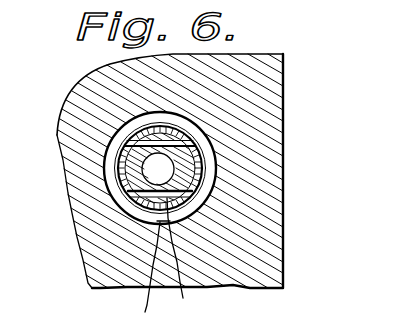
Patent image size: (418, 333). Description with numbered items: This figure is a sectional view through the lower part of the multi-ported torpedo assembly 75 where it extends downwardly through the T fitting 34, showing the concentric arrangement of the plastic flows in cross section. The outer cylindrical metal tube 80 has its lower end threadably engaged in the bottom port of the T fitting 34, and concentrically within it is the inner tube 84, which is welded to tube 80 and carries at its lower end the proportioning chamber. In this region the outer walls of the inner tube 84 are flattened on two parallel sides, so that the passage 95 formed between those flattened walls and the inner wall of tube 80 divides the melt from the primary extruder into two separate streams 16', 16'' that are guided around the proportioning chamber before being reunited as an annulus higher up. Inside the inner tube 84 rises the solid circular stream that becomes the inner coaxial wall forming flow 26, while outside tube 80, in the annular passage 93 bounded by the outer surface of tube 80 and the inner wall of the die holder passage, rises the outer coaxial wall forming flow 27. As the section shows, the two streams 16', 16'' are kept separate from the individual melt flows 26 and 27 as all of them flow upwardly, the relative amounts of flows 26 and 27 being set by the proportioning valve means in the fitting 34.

The plastic stream 16' is at (196, 80).
The plastic stream 16'' is at (251, 233).
The inner coaxial wall forming flow 26 is at (168, 170).
The outer coaxial wall forming flow 27 is at (202, 187).
The T fitting 34 is at (284, 126).
The multi-ported torpedo assembly 75 is at (122, 144).
The cylindrical metal tube 80 is at (133, 199).
The inner tube 84 is at (130, 175).
The passage 93 is at (130, 275).
The passage 95 is at (187, 262).